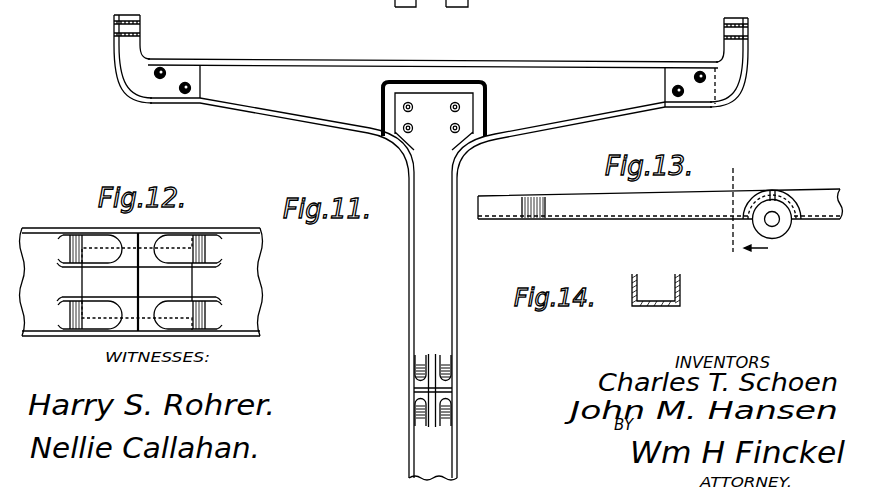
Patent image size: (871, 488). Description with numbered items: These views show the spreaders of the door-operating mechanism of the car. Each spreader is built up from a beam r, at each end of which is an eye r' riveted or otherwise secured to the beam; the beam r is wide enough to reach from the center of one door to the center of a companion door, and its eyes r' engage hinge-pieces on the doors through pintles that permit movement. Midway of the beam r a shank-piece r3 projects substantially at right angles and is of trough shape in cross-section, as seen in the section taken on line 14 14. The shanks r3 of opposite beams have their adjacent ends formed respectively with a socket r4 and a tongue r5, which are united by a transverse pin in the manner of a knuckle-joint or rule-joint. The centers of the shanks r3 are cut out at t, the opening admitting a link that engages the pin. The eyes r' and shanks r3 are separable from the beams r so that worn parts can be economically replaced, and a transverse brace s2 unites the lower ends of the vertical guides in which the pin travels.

In FIG. 11, the beam r is at (433, 90).
In FIG. 11, the eye r' is at (422, 61).
In FIG. 11, the transverse brace s2 is at (431, 12).
In FIG. 11, the shank-piece r3 is at (433, 326).
In FIG. 12, the shank-piece r3 is at (141, 282).
In FIG. 13, the shank-piece r3 is at (660, 191).
In FIG. 14, the shank-piece r3 is at (683, 296).
In FIG. 12, the socket r4 is at (93, 246).
In FIG. 13, the socket r4 is at (772, 238).
In FIG. 12, the tongue r5 is at (93, 312).
In FIG. 11, the cut-out opening t is at (428, 402).
In FIG. 12, the cut-out opening t is at (139, 282).
In FIG. 13, the section line 14 is at (743, 215).